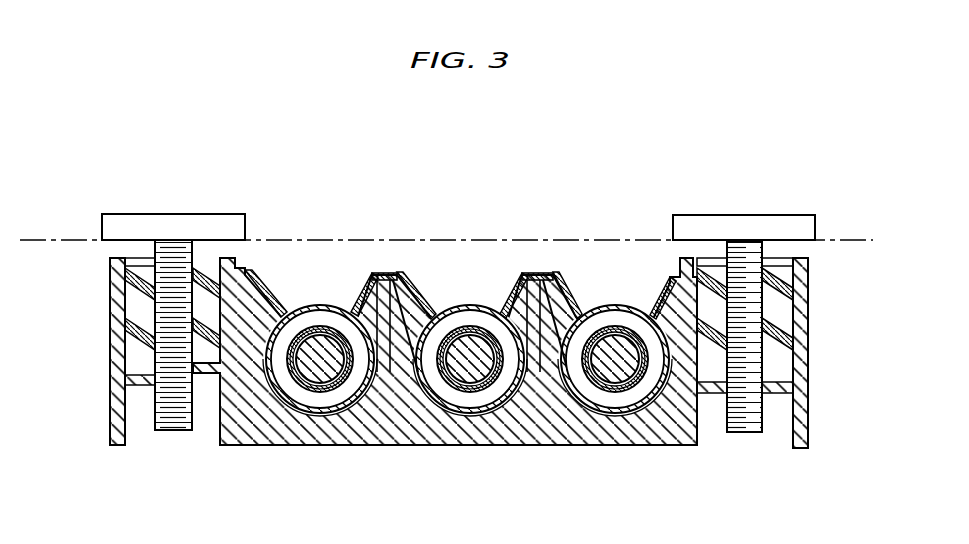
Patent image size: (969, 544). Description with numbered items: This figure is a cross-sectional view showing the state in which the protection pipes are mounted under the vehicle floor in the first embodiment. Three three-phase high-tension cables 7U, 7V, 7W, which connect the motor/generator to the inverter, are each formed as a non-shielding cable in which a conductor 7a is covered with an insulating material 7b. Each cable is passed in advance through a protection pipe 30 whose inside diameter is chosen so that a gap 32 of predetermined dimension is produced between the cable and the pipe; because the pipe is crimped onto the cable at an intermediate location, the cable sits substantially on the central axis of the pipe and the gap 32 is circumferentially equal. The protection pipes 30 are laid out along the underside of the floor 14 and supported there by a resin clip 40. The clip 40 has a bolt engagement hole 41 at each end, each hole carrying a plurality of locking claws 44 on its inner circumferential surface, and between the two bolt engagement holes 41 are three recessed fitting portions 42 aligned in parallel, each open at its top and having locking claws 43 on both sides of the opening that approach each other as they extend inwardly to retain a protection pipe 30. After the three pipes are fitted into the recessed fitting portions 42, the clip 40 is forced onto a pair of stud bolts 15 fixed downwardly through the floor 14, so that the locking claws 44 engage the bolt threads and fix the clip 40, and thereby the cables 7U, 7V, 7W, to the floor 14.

The floor 14 is at (50, 238).
The stud bolt 15 is at (168, 432).
The protection pipe 30 is at (328, 310).
The gap 32 is at (318, 310).
The resin clip 40 is at (548, 445).
The bolt engagement hole 41 is at (150, 257).
The recessed fitting portion 42 is at (283, 397).
The locking claw 43 is at (428, 314).
The locking claw 44 is at (112, 300).
The three-phase high-tension cable 7U is at (324, 429).
The three-phase high-tension cable 7V is at (473, 383).
The three-phase high-tension cable 7W is at (624, 383).
The conductor 7a is at (355, 397).
The insulating material 7b is at (299, 387).